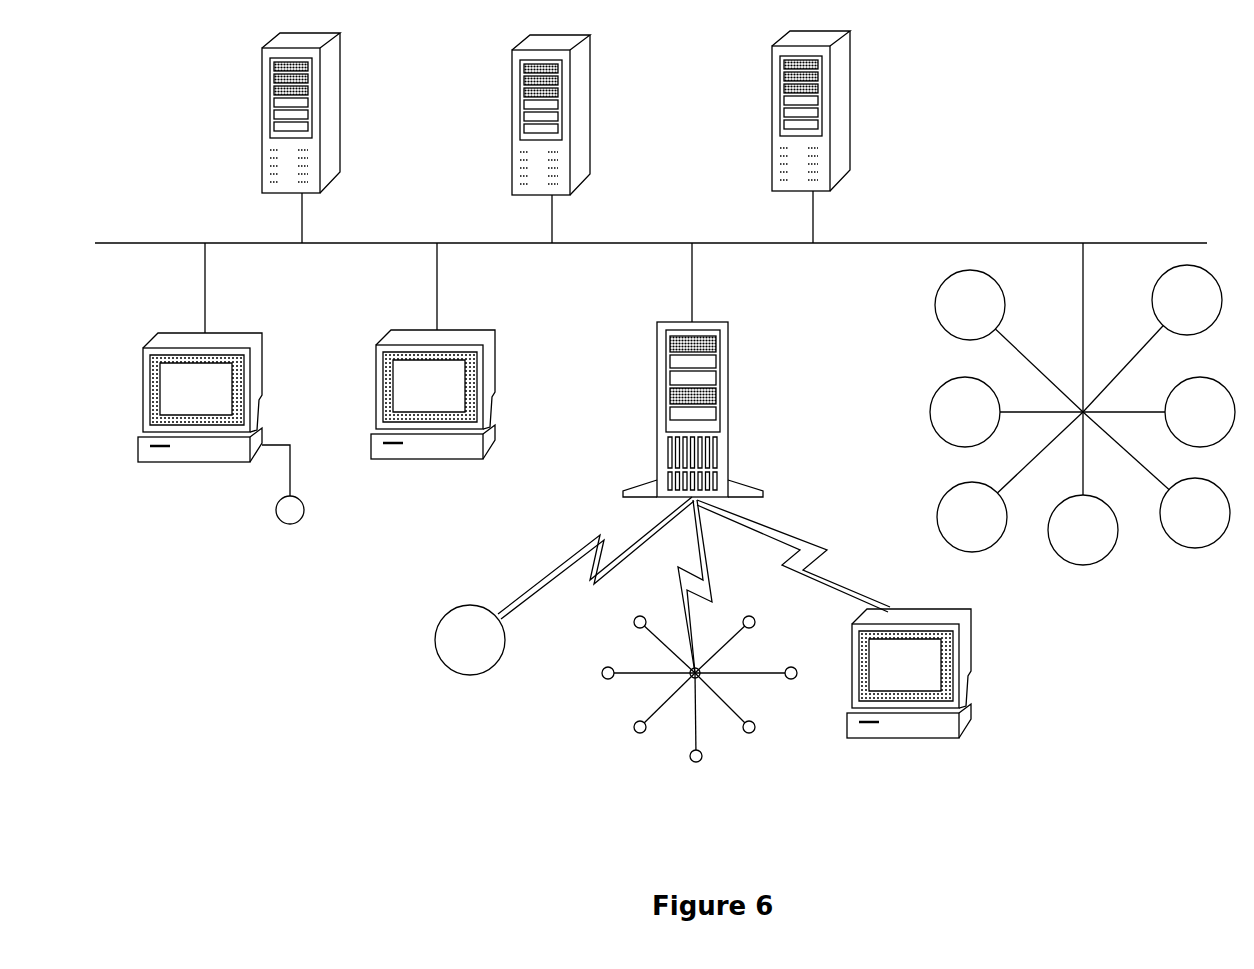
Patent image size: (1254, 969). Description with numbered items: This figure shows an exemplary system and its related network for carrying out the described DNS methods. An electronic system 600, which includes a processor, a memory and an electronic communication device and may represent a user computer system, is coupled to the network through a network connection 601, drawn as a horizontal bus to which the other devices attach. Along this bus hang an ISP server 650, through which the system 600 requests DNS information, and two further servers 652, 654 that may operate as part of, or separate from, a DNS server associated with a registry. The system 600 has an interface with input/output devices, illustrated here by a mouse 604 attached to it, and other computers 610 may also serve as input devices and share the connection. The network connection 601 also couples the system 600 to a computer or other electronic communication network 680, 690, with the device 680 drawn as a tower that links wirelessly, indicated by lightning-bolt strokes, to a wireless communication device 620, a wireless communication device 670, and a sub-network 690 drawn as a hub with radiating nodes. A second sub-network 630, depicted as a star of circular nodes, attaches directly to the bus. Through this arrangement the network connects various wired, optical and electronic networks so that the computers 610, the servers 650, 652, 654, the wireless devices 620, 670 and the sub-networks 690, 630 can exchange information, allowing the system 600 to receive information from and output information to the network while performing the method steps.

The network connection 601 is at (651, 222).
The ISP server 650 is at (333, 138).
The server 652 is at (590, 139).
The server 654 is at (852, 137).
The electronic system 600 is at (200, 383).
The mouse 604 is at (286, 503).
The computer 610 is at (433, 381).
The electronic communication network 680 is at (713, 370).
The wireless communication device 620 is at (564, 611).
The sub-network 690 is at (699, 656).
The wireless communication device 670 is at (834, 648).
The sub-network 630 is at (1082, 435).